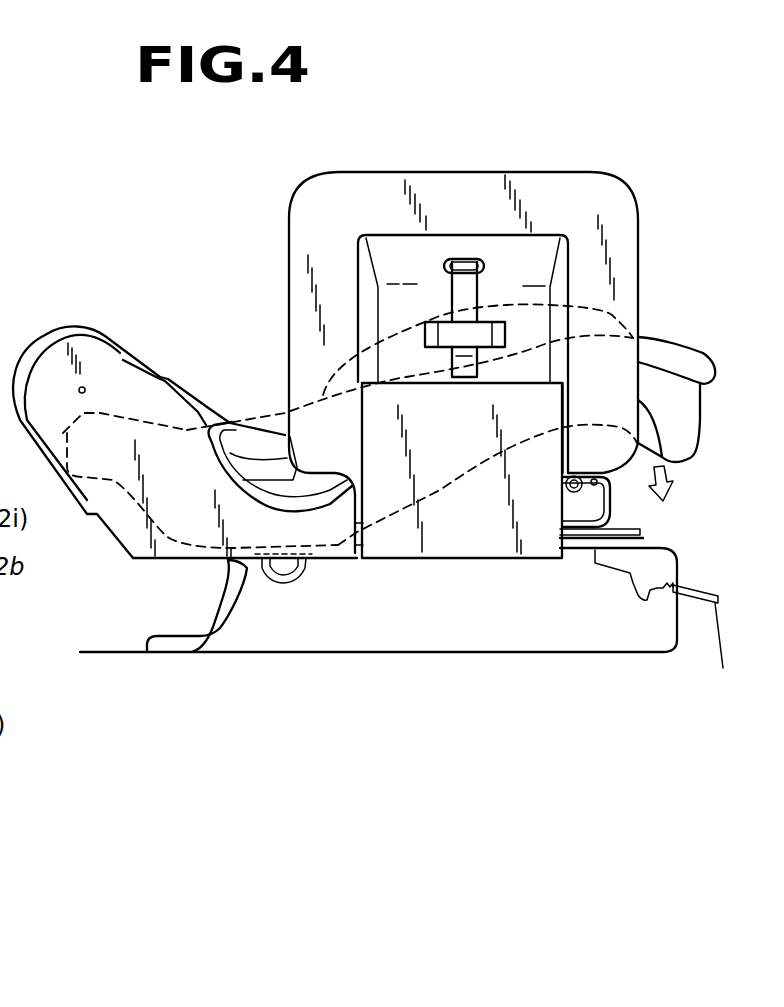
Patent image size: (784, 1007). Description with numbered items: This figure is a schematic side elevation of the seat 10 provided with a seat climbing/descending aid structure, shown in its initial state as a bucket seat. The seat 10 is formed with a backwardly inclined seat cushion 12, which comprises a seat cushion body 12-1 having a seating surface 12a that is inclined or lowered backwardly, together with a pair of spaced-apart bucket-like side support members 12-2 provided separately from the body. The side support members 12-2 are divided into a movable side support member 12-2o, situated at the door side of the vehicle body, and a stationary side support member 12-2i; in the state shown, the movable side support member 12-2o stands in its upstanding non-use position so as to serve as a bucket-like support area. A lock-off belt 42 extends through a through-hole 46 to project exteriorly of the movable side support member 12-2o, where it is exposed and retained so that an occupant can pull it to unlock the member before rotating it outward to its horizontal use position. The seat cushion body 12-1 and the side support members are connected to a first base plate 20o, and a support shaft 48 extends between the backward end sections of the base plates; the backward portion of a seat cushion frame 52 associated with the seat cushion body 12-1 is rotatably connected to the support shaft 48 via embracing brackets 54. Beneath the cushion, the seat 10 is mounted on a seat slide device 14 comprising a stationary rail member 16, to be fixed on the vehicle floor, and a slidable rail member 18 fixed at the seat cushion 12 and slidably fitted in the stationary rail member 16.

The seat 10 is at (680, 214).
The seat cushion 12 is at (250, 368).
The seating surface 12a is at (270, 413).
The seat cushion body 12-1 is at (692, 424).
The side support member 12-2 is at (611, 315).
The stationary side support member 12-2i is at (410, 367).
The movable side support member 12-2o is at (293, 219).
The seat slide device 14 is at (582, 552).
The stationary rail member 16 is at (643, 533).
The slidable rail member 18 is at (360, 545).
The first base plate 20o is at (587, 510).
The lock-off belt 42 is at (457, 296).
The through-hole 46 is at (483, 272).
The support shaft 48 is at (298, 572).
The seat cushion frame 52 is at (336, 555).
The embracing bracket 54 is at (277, 580).